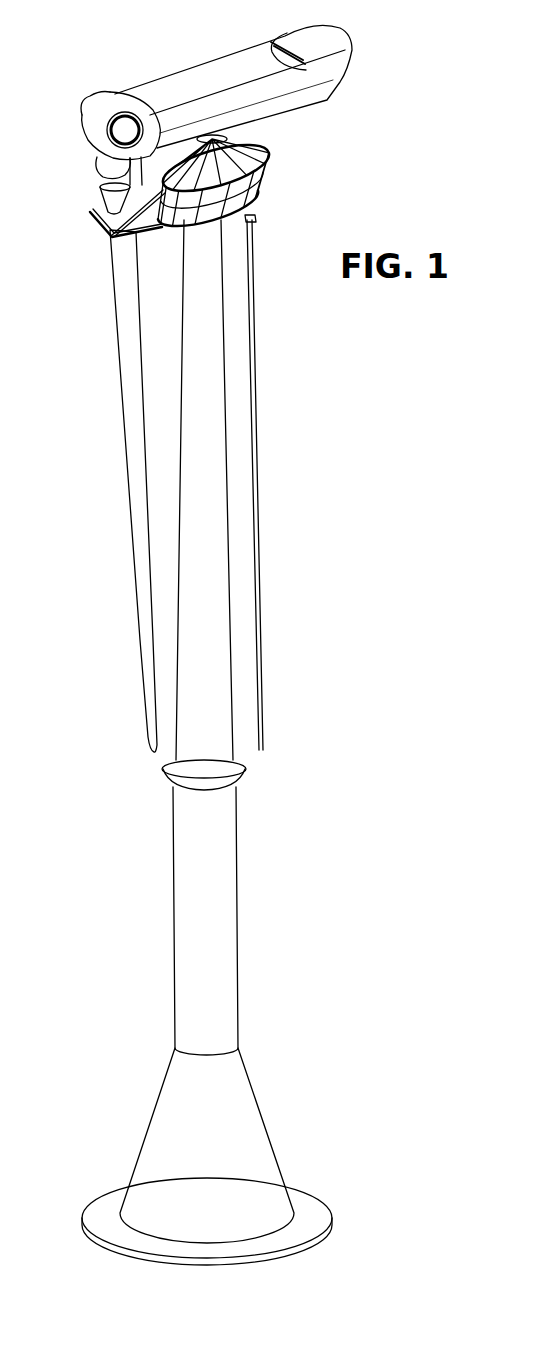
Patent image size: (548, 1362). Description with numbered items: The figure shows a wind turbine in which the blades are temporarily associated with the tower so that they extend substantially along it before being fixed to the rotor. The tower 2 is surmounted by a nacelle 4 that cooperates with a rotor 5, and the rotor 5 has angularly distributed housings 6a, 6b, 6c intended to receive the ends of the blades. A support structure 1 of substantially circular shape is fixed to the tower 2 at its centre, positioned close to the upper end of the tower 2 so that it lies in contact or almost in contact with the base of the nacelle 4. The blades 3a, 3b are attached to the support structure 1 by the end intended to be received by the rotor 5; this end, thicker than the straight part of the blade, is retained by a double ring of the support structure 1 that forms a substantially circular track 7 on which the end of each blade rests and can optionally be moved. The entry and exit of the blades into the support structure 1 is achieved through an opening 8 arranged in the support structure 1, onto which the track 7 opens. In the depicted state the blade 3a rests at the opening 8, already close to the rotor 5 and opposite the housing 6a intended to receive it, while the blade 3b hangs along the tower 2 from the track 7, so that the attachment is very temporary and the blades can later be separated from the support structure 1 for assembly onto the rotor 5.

The support structure 1 is at (263, 153).
The tower 2 is at (195, 310).
The blade 3a is at (125, 310).
The blade 3b is at (250, 323).
The nacelle 4 is at (210, 73).
The rotor 5 is at (109, 125).
The housing 6a is at (102, 167).
The housing 6b is at (127, 125).
The housing 6c is at (80, 103).
The track 7 is at (247, 220).
The opening 8 is at (93, 228).